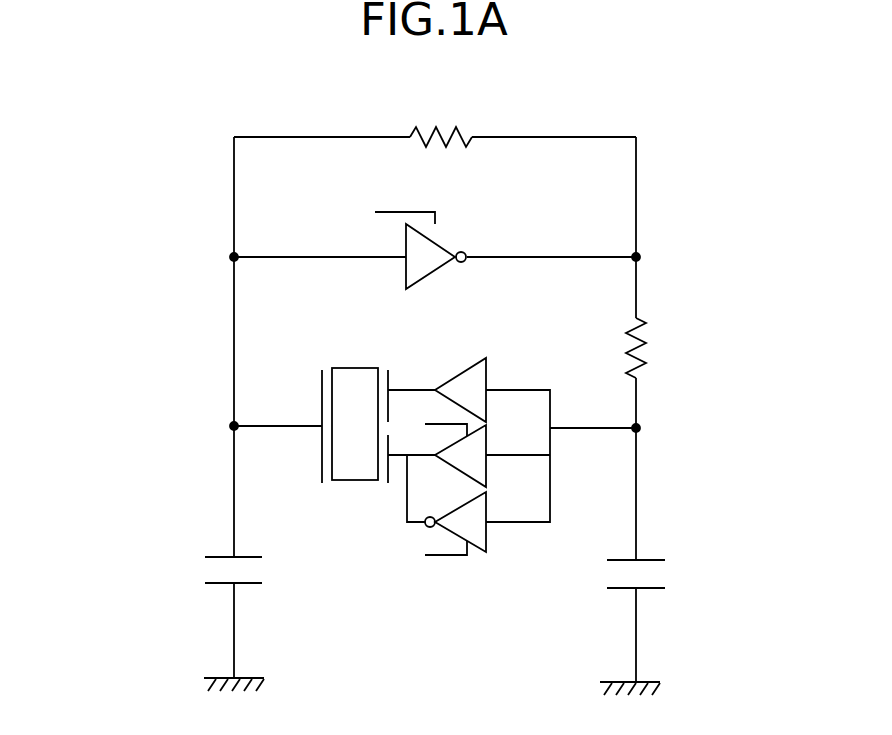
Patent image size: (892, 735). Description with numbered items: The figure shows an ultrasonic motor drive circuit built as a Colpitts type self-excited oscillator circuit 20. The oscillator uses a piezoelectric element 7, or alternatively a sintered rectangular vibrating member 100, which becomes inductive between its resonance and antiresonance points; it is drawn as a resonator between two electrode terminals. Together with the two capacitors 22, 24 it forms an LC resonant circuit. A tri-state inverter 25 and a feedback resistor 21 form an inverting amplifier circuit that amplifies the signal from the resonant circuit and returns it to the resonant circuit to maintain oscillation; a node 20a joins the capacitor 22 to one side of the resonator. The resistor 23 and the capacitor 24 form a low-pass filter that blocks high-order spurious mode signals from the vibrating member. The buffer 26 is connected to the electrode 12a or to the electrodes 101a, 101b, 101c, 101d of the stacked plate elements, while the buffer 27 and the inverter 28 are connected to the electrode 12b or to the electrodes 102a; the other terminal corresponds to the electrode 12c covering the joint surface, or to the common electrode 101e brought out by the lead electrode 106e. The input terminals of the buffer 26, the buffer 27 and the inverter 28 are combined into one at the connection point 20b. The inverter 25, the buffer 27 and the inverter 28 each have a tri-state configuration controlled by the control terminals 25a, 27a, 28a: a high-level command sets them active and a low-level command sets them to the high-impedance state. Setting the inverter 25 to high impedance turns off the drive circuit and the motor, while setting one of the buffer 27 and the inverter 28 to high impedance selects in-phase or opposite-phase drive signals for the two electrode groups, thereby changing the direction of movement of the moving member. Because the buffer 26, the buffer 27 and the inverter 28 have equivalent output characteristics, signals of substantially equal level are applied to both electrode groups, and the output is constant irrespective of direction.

The self-excited oscillator circuit 20 is at (667, 180).
The first node 20a is at (231, 425).
The connection point 20b is at (639, 427).
The feedback resistor 21 is at (438, 128).
The capacitor 22 is at (202, 570).
The resistor 23 is at (655, 345).
The capacitor 24 is at (666, 572).
The inverter 25 is at (441, 246).
The control terminal 25a is at (398, 208).
The buffer 26 is at (488, 370).
The buffer 27 is at (487, 460).
The control terminal 27a is at (458, 423).
The inverter 28 is at (487, 540).
The control terminal 28a is at (448, 557).
The vibrating member 100 is at (355, 482).
The piezoelectric element 7 is at (355, 503).
The electrode 101a is at (358, 489).
The electrode 101b is at (358, 489).
The electrode 101c is at (358, 489).
The electrode 101d is at (343, 507).
The electrode pattern 12a is at (388, 378).
The electrode pattern 12b is at (389, 486).
The electrode 12c is at (320, 432).
The electrode 101e is at (282, 453).
The lead electrode 106e is at (282, 453).
The electrode 102a is at (411, 530).